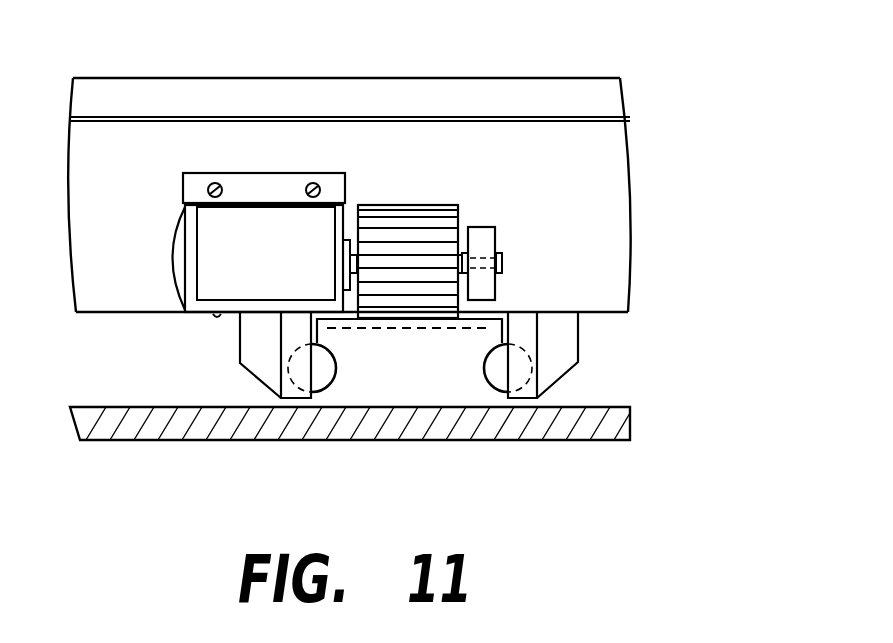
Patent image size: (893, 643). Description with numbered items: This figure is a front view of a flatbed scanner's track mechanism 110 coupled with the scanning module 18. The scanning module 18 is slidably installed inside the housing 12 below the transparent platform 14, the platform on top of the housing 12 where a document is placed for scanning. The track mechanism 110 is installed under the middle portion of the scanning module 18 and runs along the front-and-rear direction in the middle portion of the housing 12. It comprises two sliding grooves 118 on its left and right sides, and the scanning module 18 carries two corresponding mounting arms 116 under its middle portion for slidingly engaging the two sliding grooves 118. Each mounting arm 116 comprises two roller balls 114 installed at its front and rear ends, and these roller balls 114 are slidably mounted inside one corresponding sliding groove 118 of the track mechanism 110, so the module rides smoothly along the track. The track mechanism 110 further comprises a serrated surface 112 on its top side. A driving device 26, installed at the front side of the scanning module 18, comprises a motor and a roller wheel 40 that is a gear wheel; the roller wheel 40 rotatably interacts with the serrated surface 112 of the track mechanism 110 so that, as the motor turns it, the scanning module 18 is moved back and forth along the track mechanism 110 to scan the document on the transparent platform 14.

The housing 12 is at (477, 423).
The transparent platform 14 is at (442, 88).
The scanning module 18 is at (597, 213).
The driving device 26 is at (353, 153).
The roller wheel 40 is at (447, 205).
The track mechanism 110 is at (357, 400).
The serrated surface 112 is at (383, 332).
The roller balls 114 is at (293, 369).
The mounting arms 116 is at (253, 338).
The sliding grooves 118 is at (485, 378).